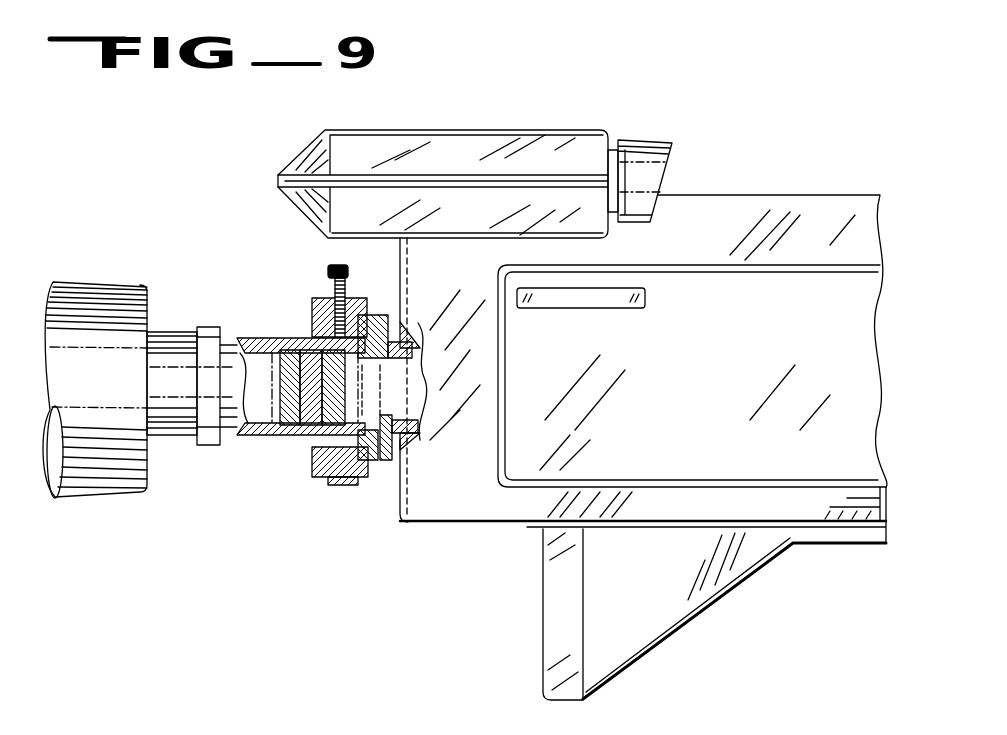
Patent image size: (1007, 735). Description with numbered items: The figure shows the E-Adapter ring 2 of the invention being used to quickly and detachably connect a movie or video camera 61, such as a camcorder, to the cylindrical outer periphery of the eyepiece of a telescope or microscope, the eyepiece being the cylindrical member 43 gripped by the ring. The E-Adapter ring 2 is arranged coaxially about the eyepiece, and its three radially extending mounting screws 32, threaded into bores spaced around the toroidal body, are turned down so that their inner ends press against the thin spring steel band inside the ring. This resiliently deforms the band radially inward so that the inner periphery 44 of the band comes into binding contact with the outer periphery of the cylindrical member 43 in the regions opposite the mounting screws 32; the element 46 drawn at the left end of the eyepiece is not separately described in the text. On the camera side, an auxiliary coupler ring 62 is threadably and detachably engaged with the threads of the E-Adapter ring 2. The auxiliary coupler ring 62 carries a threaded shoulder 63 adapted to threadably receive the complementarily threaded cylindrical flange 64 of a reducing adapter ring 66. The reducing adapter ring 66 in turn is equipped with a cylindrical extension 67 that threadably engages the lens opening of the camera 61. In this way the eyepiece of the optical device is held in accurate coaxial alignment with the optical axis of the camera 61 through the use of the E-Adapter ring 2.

The E-Adapter ring 2 is at (330, 497).
The mounting screws 32 is at (349, 278).
The cylindrical member 43 is at (270, 337).
The inner periphery of the resilient deformable band 44 is at (327, 440).
The shaft 46 is at (262, 408).
The video camera 61 is at (757, 192).
The auxiliary coupler ring 62 is at (366, 390).
The threaded shoulder 63 is at (374, 318).
The threaded cylindrical flange 64 is at (381, 462).
The reducing adapter ring 66 is at (386, 448).
The cylindrical extension 67 is at (392, 418).